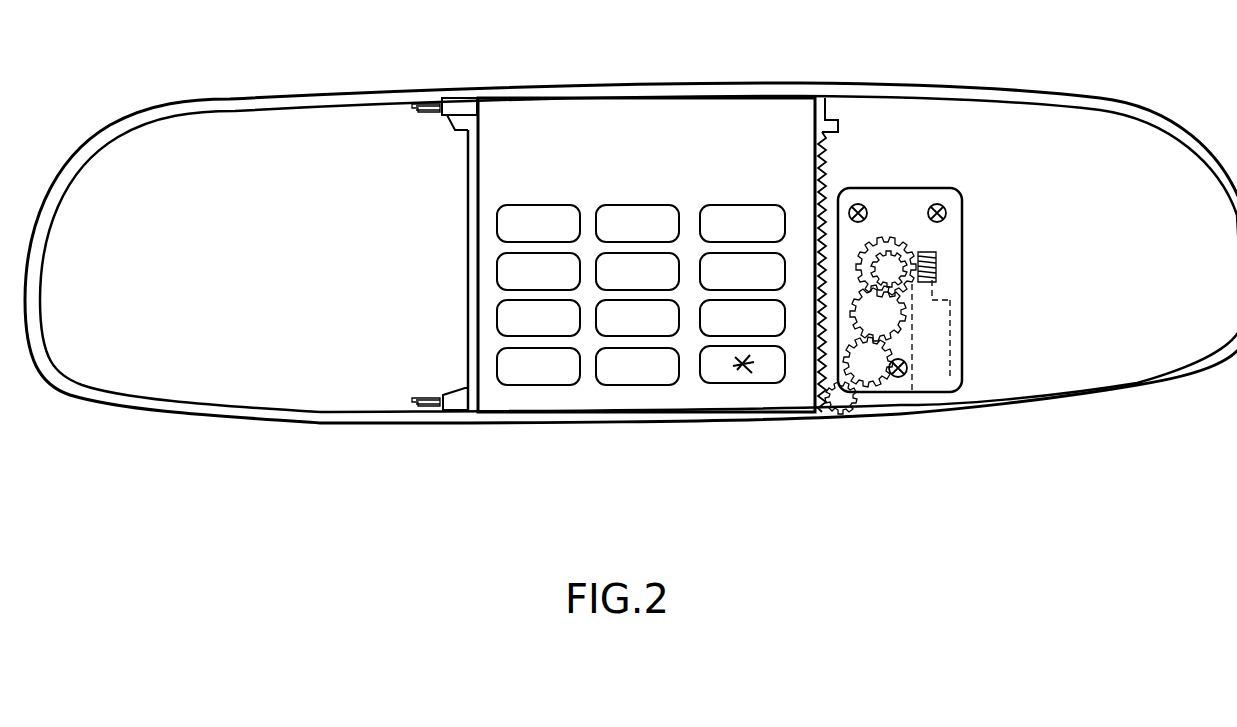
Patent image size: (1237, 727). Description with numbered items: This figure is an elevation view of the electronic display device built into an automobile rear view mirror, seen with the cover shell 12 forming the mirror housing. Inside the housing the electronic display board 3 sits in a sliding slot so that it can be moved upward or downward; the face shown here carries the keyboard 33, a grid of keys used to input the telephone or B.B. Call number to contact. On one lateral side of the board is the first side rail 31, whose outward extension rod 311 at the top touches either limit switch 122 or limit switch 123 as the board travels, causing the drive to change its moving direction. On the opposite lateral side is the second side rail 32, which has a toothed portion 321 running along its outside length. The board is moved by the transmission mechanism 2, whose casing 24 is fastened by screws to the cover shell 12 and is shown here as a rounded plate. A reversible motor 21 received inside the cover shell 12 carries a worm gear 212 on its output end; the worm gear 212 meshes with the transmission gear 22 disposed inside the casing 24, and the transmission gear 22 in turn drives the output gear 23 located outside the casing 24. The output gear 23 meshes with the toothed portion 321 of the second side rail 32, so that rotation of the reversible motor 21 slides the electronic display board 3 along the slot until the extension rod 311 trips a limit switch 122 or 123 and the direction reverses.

The cover shell 12 is at (1032, 93).
The limit switch 122 is at (447, 410).
The limit switch 123 is at (458, 105).
The transmission mechanism 2 is at (907, 185).
The reversible motor 21 is at (947, 323).
The worm gear 212 is at (937, 258).
The transmission gear 22 is at (925, 300).
The output gear 23 is at (835, 418).
The casing 24 is at (943, 242).
The electronic display board 3 is at (636, 118).
The first side rail 31 is at (465, 198).
The outward extension rod 311 is at (455, 133).
The second side rail 32 is at (835, 120).
The toothed portion 321 is at (824, 178).
The keyboard 33 is at (722, 375).